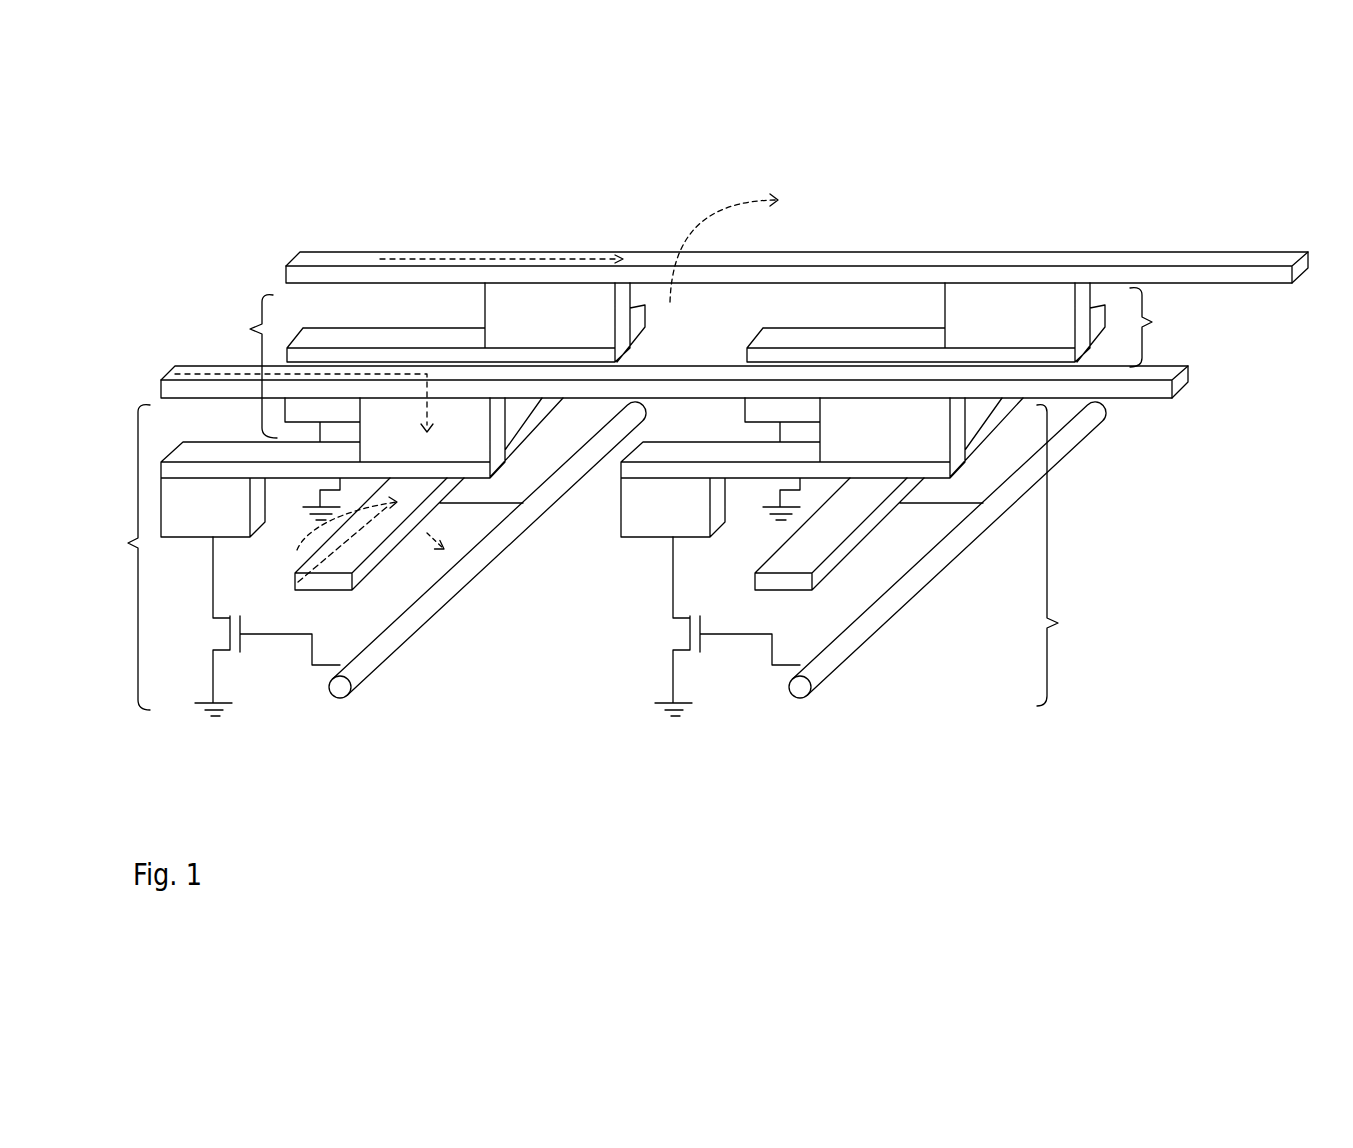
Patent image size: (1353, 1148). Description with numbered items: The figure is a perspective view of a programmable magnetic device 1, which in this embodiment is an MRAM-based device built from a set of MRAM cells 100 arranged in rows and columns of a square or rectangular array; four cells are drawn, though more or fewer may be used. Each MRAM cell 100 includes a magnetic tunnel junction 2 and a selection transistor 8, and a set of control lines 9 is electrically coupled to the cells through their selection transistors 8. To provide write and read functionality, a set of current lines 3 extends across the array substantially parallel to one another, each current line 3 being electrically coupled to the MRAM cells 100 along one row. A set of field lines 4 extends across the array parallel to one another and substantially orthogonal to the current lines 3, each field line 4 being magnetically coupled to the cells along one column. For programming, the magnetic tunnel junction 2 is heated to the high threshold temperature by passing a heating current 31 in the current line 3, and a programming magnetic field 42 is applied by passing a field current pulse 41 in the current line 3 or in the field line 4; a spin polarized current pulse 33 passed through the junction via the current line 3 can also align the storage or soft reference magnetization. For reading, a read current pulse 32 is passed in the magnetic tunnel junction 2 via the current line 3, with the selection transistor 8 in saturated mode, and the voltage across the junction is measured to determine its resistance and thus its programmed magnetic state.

The programmable magnetic device 1 is at (1050, 200).
The magnetic tunnel junction 2 is at (915, 432).
The current line 3 is at (705, 332).
The field line 4 is at (297, 582).
The selection transistor 8 is at (672, 635).
The control line 9 is at (325, 677).
The heating current 31 is at (683, 300).
The read current pulse 32 is at (683, 300).
The spin polarized current pulse 33 is at (175, 366).
The field current pulse 41 is at (517, 250).
The programming magnetic field 42 is at (708, 213).
The MRAM cell 100 is at (637, 496).